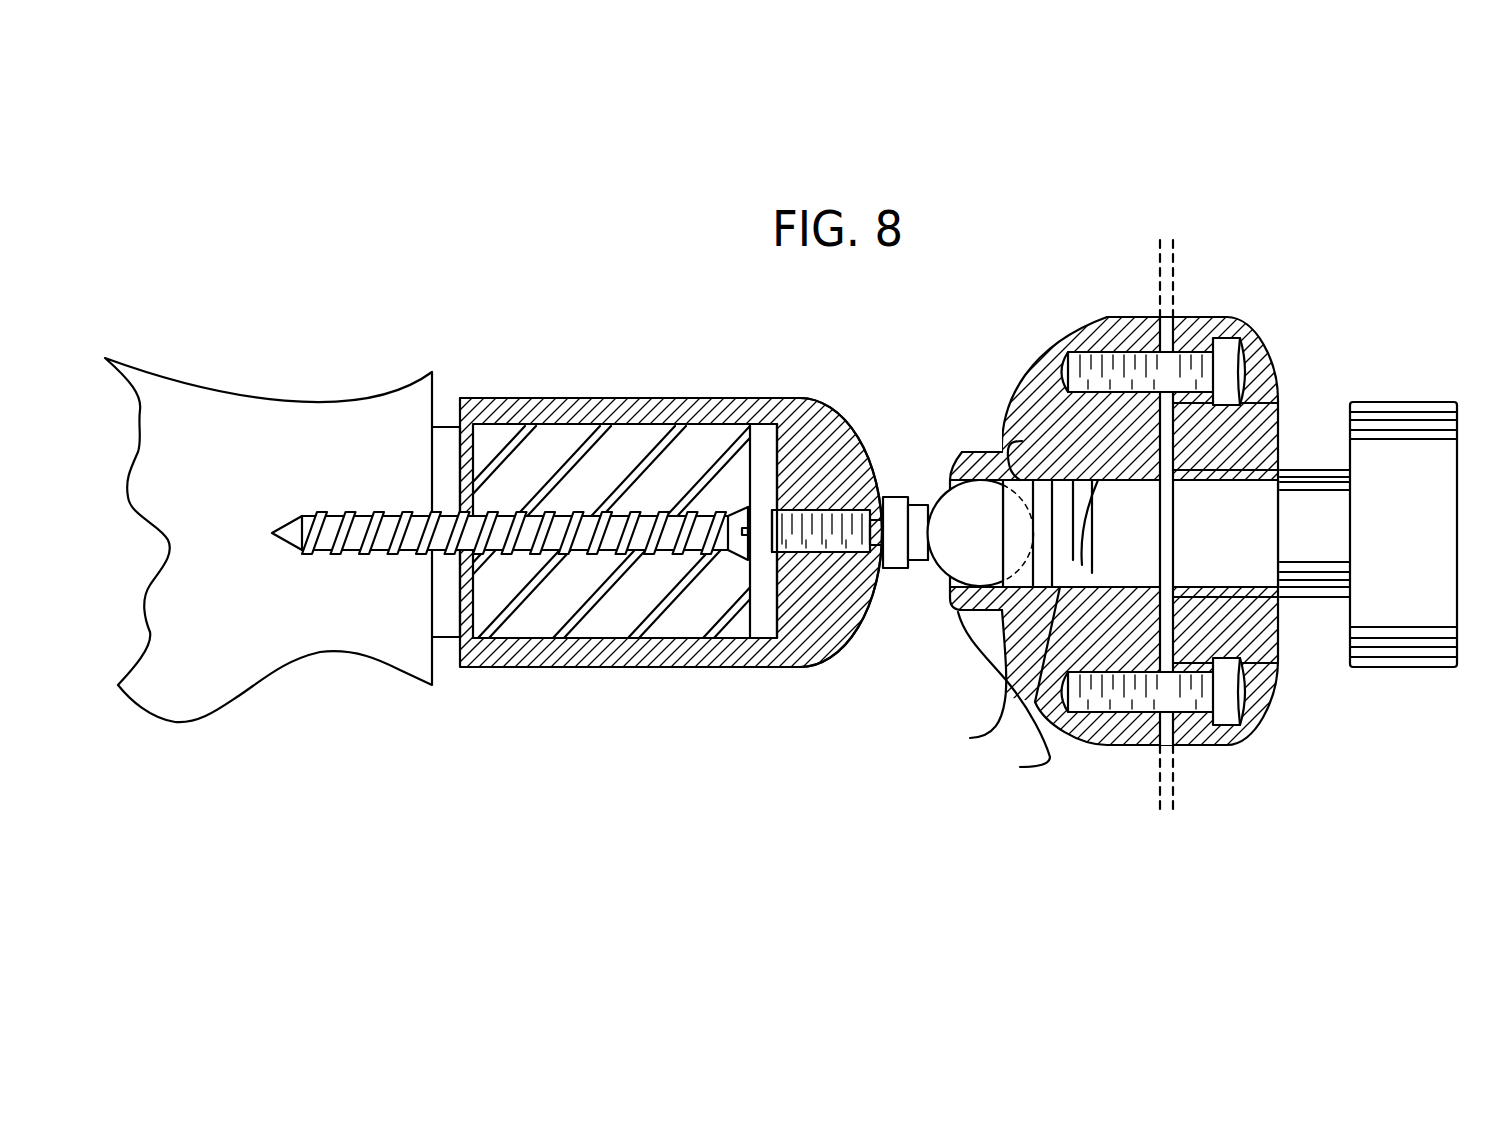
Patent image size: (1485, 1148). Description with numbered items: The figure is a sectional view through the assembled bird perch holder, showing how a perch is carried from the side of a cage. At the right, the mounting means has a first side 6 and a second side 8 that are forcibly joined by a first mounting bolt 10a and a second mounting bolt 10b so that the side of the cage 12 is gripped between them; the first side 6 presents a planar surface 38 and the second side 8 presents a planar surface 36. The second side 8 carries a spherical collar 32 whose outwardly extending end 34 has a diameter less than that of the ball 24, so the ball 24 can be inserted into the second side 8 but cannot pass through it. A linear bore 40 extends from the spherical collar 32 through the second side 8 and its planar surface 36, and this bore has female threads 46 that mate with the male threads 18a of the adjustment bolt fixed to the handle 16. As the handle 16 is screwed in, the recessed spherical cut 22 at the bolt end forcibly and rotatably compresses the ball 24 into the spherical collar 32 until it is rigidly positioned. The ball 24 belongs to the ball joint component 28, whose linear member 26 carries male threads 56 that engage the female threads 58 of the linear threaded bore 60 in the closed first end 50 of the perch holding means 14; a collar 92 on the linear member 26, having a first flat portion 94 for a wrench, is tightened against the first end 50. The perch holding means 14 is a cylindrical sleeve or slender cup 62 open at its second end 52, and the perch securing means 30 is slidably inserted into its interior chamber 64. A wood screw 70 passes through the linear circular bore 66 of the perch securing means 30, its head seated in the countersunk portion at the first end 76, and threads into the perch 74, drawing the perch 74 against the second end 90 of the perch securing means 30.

The first side 6 is at (1205, 318).
The second side 8 is at (1080, 335).
The first mounting bolt 10a is at (1245, 355).
The second mounting bolt 10b is at (1250, 700).
The cage 12 is at (1180, 240).
The perch holding means 14 is at (688, 370).
The handle 16 is at (1400, 668).
The male threads 18a is at (1082, 565).
The spherical cut 22 is at (1000, 526).
The ball 24 is at (947, 453).
The linear member 26 is at (930, 588).
The ball joint component 28 is at (957, 612).
The perch securing means 30 is at (619, 531).
The spherical collar 32 is at (973, 452).
The outwardly extending end 34 is at (975, 738).
The planar surface 36 is at (1175, 437).
The planar surface 38 is at (1175, 620).
The linear bore 40 is at (1035, 452).
The female threads 46 is at (1110, 482).
The first end 50 is at (843, 400).
The second end 52 is at (666, 574).
The male threads 56 is at (800, 512).
The female threads 58 is at (812, 555).
The linear threaded bore 60 is at (842, 478).
The slender cup 62 is at (700, 668).
The interior chamber 64 is at (758, 455).
The linear circular bore 66 is at (617, 540).
The wood screw 70 is at (366, 516).
The perch 74 is at (205, 385).
The first end 76 is at (762, 595).
The second end 90 is at (445, 460).
The collar 92 is at (891, 497).
The first flat portion 94 is at (848, 555).